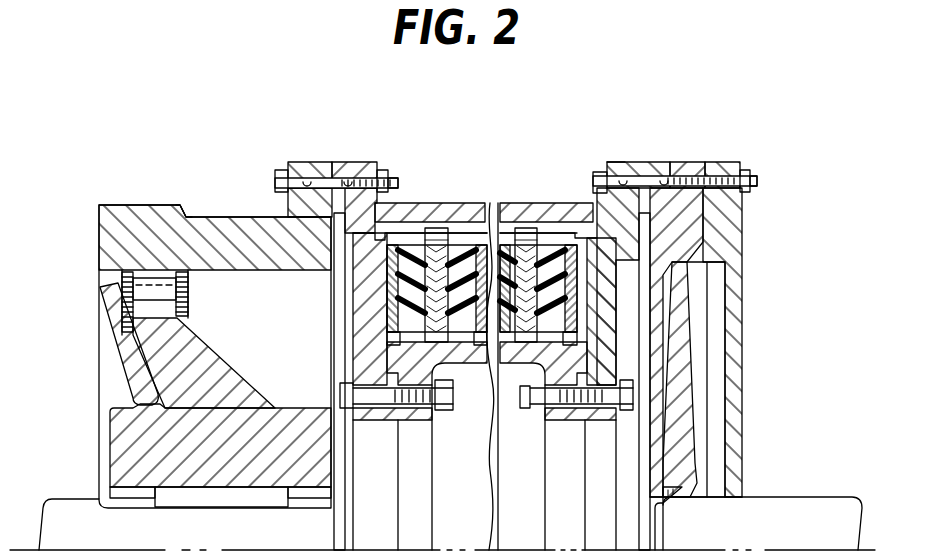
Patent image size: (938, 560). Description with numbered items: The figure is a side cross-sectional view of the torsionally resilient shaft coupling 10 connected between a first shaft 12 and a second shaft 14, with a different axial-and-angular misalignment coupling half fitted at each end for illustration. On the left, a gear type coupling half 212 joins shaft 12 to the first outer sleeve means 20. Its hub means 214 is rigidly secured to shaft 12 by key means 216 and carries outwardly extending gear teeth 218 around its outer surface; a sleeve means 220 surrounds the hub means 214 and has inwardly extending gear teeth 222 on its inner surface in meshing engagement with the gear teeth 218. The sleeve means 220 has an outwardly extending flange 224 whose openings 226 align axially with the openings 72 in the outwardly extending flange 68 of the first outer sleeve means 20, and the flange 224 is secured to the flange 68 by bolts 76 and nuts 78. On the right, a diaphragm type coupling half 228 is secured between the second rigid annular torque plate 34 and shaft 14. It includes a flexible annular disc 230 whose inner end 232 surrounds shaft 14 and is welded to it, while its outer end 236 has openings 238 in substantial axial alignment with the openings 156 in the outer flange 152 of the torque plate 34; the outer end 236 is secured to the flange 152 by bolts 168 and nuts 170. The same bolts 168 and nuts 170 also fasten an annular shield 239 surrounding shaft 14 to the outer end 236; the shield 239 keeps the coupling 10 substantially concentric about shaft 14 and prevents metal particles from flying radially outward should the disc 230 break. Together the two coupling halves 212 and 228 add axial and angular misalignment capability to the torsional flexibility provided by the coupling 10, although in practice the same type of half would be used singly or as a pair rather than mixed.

The torsionally resilient shaft coupling 10 is at (509, 187).
The first shaft 12 is at (75, 499).
The second shaft 14 is at (827, 513).
The first outer sleeve means 20 is at (438, 205).
The second rigid annular torque plate 34 is at (633, 162).
The outwardly extending flange 68 is at (368, 163).
The axially extending openings 72 is at (360, 178).
The bolts 76 is at (282, 166).
The nuts 78 is at (388, 169).
The outer flange 152 is at (622, 173).
The axially extending openings 156 is at (614, 173).
The bolts 168 is at (593, 181).
The nuts 170 is at (747, 168).
The gear type coupling half 212 is at (99, 240).
The hub means 214 is at (145, 440).
The key means 216 is at (200, 496).
The outwardly extending gear teeth 218 is at (188, 270).
The sleeve means 220 is at (182, 206).
The inwardly extending gear teeth 222 is at (150, 270).
The outwardly extending flange 224 is at (304, 162).
The axially extending openings 226 is at (288, 191).
The diaphragm type coupling half 228 is at (680, 163).
The flexible annular disc 230 is at (688, 338).
The inner end 232 is at (700, 478).
The outer end 236 is at (700, 164).
The axially extending openings 238 is at (668, 174).
The annular shield 239 is at (745, 240).